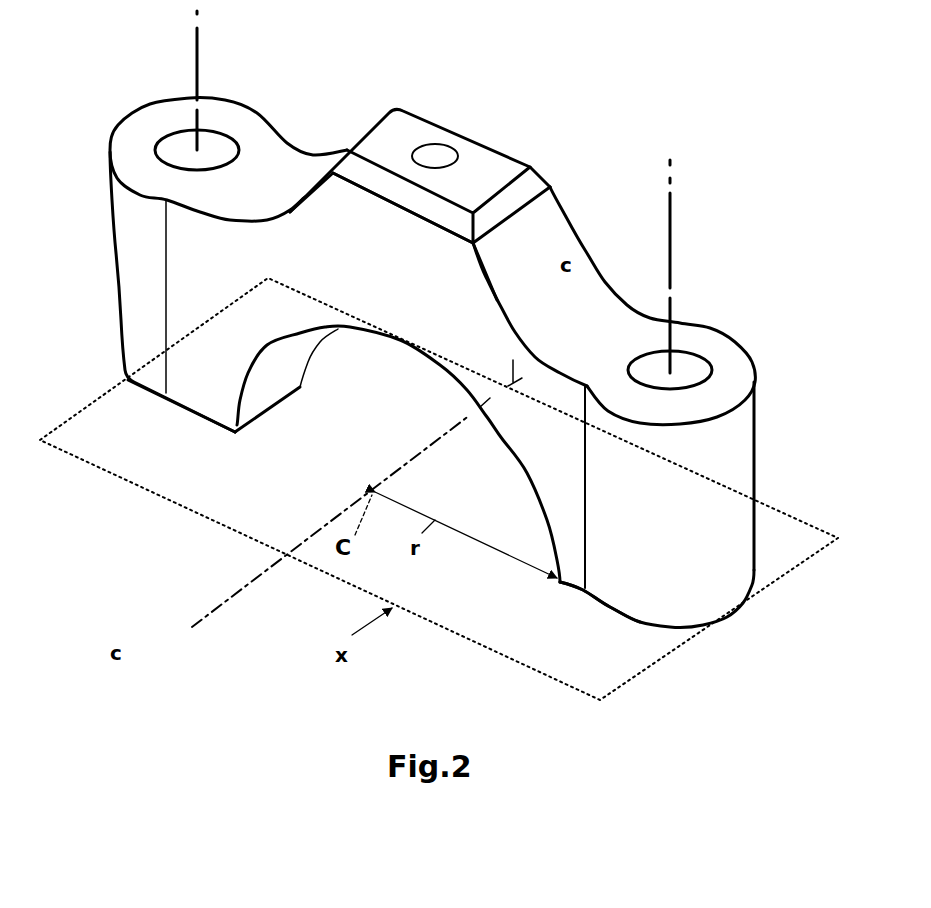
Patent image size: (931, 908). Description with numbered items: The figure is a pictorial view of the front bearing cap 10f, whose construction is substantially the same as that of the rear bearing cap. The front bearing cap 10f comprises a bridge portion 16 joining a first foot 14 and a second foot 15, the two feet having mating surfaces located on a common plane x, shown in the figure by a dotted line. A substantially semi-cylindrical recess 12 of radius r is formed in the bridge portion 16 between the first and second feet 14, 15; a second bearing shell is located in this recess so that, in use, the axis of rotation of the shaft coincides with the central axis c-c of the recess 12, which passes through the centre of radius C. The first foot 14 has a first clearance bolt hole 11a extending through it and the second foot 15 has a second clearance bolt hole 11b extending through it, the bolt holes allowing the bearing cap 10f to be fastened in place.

The front bearing cap 10f is at (118, 312).
The first clearance bolt hole 11a is at (166, 138).
The second clearance bolt hole 11b is at (693, 350).
The semi-cylindrical recess 12 is at (267, 362).
The first foot 14 is at (212, 423).
The second foot 15 is at (608, 610).
The bridge portion 16 is at (393, 288).